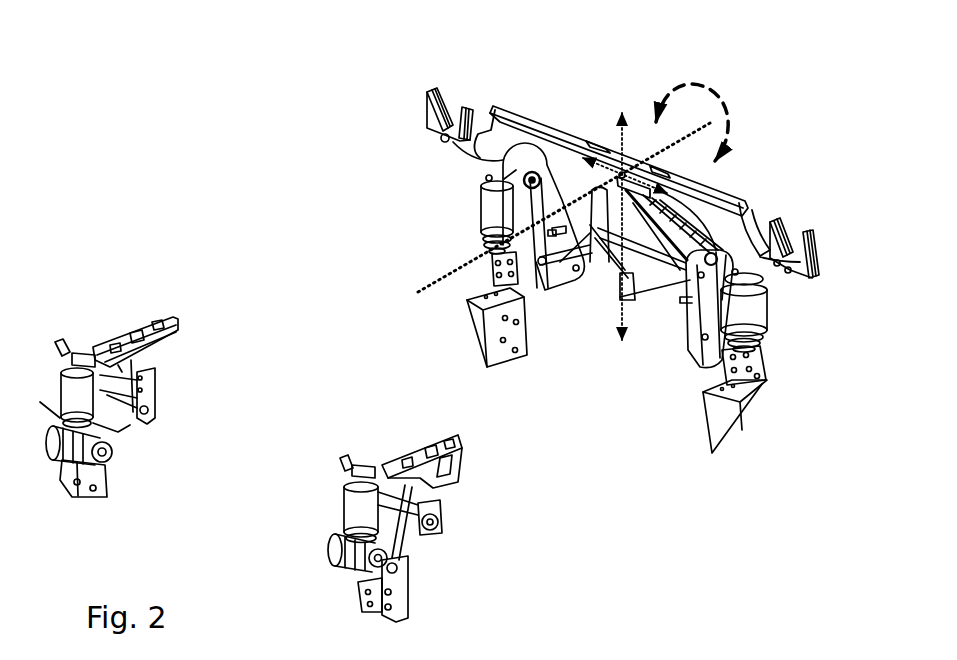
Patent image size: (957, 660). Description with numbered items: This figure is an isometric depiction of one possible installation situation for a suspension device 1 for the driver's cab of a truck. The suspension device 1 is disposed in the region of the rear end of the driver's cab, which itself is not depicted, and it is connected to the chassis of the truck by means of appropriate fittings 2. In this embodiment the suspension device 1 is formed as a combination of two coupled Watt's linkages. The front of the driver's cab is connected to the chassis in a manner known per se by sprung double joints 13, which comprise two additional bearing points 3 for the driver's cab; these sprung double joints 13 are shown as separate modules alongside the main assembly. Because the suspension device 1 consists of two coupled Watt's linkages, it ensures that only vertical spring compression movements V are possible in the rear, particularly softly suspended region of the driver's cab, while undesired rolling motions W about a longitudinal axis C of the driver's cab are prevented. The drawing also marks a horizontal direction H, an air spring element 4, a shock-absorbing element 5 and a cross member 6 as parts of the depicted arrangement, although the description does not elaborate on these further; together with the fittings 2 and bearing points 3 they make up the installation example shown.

The suspension device 1 is at (577, 339).
The fittings 2 is at (478, 328).
The bearing points 3 is at (459, 96).
The air spring 4 is at (780, 313).
The shock absorber 5 is at (466, 199).
The cross member 6 is at (549, 150).
The sprung double joints 13 is at (162, 449).
The longitudinal axis C is at (447, 272).
The horizontal axis H is at (613, 175).
The vertical spring compression movements V is at (637, 240).
The rolling motions W is at (700, 115).